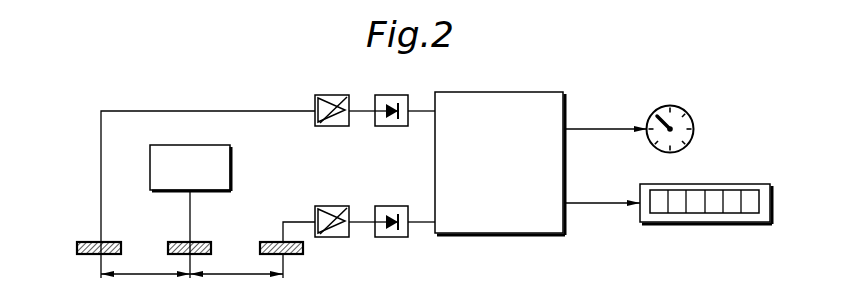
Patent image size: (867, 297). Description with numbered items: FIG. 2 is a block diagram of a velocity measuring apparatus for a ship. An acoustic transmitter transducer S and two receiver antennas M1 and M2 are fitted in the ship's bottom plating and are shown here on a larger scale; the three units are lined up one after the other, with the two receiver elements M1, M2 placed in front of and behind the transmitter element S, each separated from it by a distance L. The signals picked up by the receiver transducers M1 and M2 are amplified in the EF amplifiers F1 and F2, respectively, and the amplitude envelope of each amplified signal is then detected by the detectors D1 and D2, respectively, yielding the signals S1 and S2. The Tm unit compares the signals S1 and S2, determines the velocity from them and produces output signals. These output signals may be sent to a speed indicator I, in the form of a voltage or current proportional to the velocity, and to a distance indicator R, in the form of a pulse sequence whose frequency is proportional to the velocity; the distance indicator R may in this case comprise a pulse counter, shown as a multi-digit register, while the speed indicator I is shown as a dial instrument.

The receiver antenna M2 is at (95, 242).
The acoustic transmitter transducer S is at (172, 242).
The receiver antenna M1 is at (268, 242).
The EF amplifier F2 is at (337, 127).
The detector D2 is at (396, 127).
The signal S2 is at (419, 122).
The EF amplifier F1 is at (336, 238).
The detector D1 is at (390, 238).
The signal S1 is at (419, 213).
The Tm unit Tm is at (500, 163).
The speed indicator I is at (693, 122).
The distance indicator R is at (741, 215).
The distance L is at (192, 284).